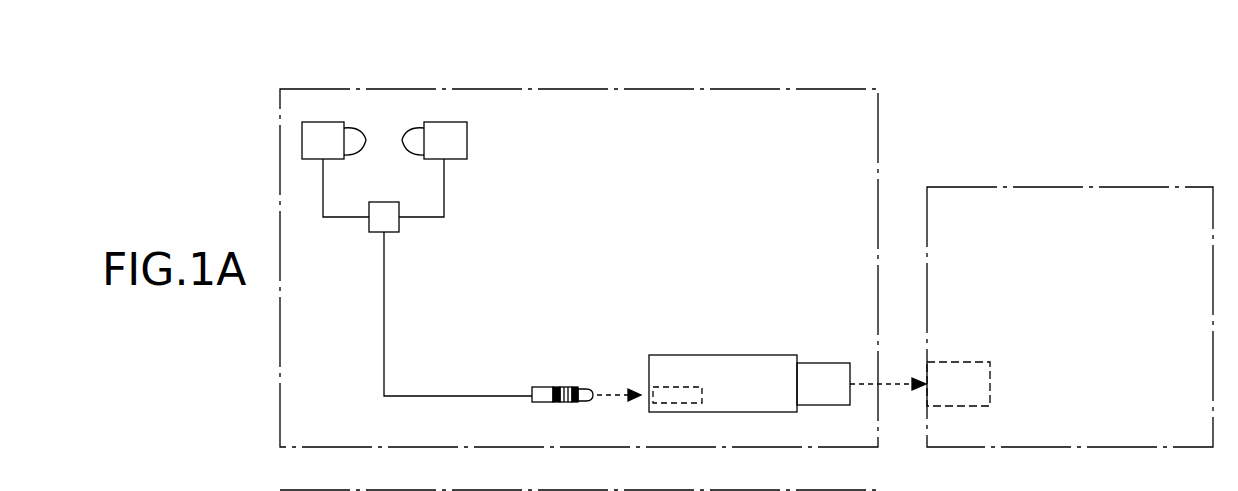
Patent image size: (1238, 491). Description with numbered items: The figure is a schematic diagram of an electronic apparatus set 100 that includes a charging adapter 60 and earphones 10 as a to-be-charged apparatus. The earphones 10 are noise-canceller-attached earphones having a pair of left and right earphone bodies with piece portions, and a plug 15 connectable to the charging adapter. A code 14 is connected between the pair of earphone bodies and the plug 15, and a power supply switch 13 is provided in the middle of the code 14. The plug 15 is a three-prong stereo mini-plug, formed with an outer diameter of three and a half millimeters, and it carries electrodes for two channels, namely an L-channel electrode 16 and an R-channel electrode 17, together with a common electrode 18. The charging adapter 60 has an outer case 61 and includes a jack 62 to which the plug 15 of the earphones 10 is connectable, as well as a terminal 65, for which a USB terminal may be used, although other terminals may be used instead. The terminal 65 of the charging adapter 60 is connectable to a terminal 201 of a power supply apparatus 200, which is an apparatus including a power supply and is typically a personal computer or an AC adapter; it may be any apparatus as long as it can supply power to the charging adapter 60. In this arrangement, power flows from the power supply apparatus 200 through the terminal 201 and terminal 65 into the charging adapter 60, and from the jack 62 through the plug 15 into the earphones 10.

The electronic apparatus set 100 is at (755, 89).
The power supply apparatus 200 is at (1094, 187).
The terminal 201 is at (955, 407).
The earphones 10 is at (487, 149).
The power supply switch 13 is at (399, 222).
The code 14 is at (384, 338).
The plug 15 is at (563, 349).
The L-channel electrode 16 is at (583, 389).
The R-channel electrode 17 is at (560, 387).
The common electrode 18 is at (534, 387).
The charging adapter 60 is at (749, 339).
The outer case 61 is at (768, 367).
The jack 62 is at (672, 385).
The terminal 65 is at (822, 372).